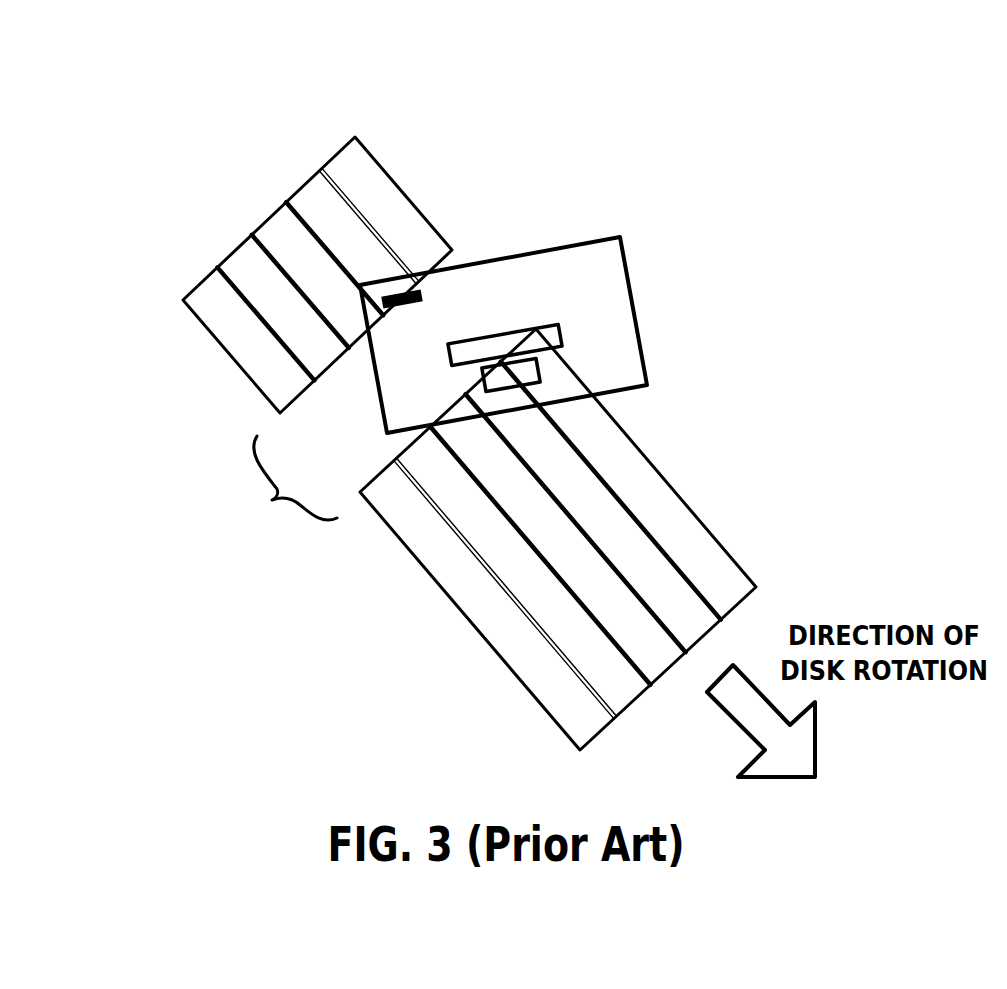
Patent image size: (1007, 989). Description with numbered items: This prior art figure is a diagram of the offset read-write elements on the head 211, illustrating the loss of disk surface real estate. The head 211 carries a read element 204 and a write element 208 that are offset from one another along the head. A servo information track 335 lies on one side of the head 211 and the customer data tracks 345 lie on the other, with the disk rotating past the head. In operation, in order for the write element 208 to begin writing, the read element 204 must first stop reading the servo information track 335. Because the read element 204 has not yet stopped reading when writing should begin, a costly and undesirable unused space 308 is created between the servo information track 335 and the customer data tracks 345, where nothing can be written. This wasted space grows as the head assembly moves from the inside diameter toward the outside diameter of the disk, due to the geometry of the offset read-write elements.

The read element 204 is at (422, 290).
The write element 208 is at (556, 329).
The head 211 is at (608, 283).
The unused space 308 is at (254, 522).
The servo information track 335 is at (390, 151).
The customer data tracks 345 is at (705, 491).